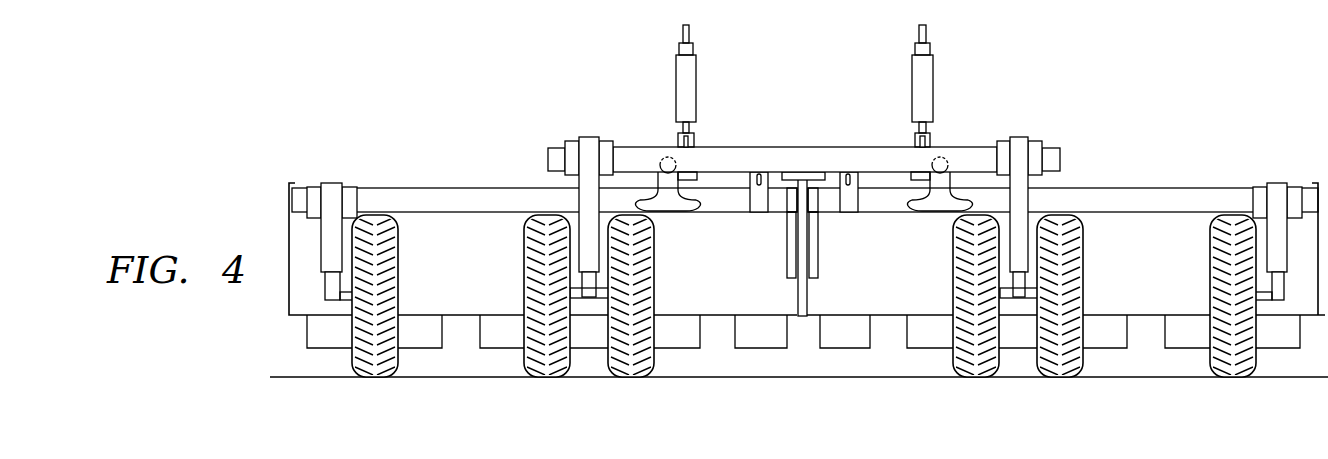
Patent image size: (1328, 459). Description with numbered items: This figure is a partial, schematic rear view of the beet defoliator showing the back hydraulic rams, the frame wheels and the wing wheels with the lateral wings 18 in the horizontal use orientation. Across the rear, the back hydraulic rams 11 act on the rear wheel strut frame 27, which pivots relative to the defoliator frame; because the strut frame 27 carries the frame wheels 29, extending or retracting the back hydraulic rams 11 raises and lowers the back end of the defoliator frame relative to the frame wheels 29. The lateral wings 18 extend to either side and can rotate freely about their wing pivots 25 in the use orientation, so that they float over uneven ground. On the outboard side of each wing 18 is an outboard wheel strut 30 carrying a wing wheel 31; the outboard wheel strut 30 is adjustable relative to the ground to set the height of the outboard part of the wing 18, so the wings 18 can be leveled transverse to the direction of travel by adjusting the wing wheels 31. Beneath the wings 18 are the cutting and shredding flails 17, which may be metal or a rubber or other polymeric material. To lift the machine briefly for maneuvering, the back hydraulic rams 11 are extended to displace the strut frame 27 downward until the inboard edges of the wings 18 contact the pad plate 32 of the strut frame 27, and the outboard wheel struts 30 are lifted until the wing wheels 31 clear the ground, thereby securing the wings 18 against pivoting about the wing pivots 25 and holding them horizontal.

The back hydraulic ram 11 is at (676, 88).
The cutting and shredding flails 17 is at (693, 348).
The lateral wing 18 is at (458, 188).
The wing pivot 25 is at (949, 178).
The rear wheel strut frame 27 is at (758, 147).
The frame wheel 29 is at (548, 377).
The outboard wheel strut 30 is at (336, 183).
The wing wheel 31 is at (375, 377).
The pad plate 32 is at (803, 172).